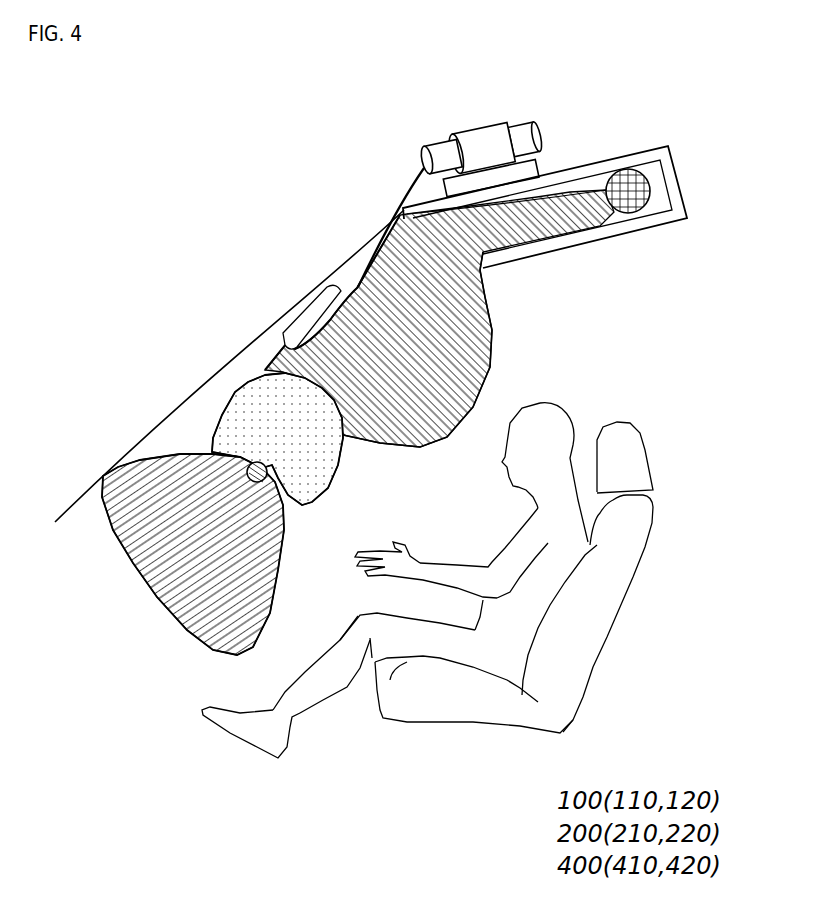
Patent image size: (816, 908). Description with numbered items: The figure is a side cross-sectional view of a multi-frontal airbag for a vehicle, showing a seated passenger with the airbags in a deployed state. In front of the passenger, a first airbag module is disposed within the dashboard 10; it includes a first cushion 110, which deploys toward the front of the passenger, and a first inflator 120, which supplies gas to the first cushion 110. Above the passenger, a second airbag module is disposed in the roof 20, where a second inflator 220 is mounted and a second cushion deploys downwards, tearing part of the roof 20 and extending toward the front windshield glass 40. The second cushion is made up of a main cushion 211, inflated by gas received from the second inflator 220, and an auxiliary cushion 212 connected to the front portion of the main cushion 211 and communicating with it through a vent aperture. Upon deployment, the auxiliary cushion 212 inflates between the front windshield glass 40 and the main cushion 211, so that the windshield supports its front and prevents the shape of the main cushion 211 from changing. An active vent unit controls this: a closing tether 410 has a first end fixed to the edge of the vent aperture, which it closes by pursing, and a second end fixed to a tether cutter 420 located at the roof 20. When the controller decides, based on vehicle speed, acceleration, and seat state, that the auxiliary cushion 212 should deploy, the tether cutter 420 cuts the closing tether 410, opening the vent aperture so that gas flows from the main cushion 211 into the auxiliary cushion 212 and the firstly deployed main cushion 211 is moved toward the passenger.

The dashboard 10 is at (168, 575).
The roof 20 is at (673, 182).
The front windshield glass 40 is at (191, 392).
The first cushion 110 is at (258, 392).
The first inflator 120 is at (260, 462).
The main cushion 211 is at (482, 330).
The auxiliary cushion 212 is at (307, 318).
The second inflator 220 is at (628, 207).
The closing tether 410 is at (405, 200).
The tether cutter 420 is at (530, 136).